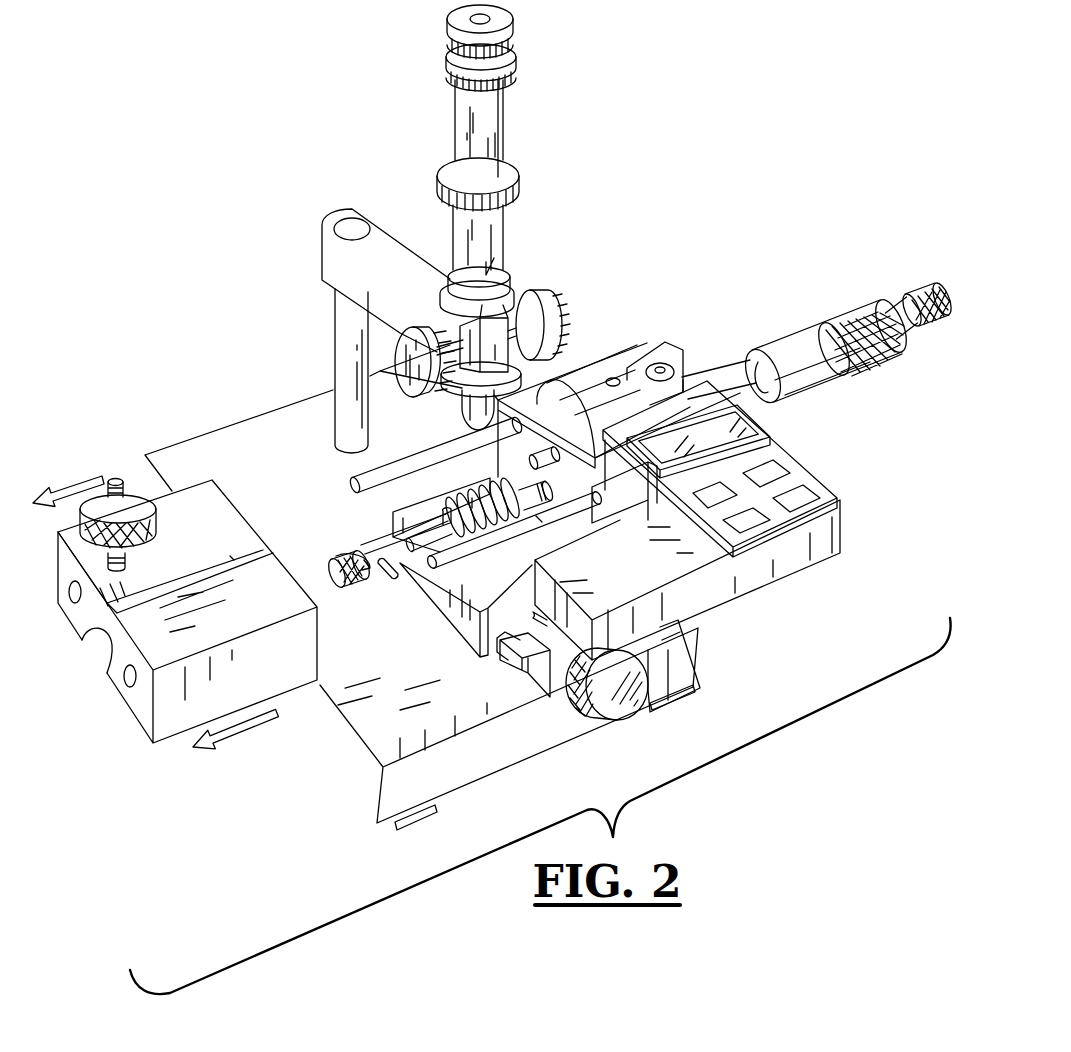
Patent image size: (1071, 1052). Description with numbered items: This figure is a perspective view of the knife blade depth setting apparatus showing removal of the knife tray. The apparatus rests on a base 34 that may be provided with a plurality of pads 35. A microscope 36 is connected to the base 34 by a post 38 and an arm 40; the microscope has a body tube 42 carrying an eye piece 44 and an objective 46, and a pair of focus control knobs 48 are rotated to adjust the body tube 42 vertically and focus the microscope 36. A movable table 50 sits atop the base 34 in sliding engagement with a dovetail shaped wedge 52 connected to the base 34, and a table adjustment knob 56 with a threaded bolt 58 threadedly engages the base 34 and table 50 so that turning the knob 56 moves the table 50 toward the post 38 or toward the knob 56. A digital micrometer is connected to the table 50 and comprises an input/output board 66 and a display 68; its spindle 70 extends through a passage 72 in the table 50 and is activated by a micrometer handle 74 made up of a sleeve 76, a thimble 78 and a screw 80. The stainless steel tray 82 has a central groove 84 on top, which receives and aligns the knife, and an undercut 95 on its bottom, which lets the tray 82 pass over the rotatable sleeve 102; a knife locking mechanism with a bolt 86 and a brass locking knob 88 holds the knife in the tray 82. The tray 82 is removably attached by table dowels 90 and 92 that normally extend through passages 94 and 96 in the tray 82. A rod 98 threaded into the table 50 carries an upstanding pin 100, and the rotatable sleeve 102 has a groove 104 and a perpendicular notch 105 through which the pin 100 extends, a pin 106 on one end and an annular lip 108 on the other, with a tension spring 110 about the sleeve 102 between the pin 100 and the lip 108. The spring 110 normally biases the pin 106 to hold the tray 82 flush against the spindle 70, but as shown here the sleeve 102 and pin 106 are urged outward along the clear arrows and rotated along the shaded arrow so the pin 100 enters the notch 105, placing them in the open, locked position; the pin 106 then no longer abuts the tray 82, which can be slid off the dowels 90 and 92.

The base 34 is at (401, 722).
The pads 35 is at (415, 823).
The microscope 36 is at (568, 317).
The post 38 is at (335, 432).
The arm 40 is at (374, 280).
The body tube 42 is at (522, 201).
The eye piece 44 is at (506, 100).
The objective 46 is at (458, 415).
The focus control knobs 48 is at (552, 302).
The movable table 50 is at (483, 601).
The dovetail shaped wedge 52 is at (508, 656).
The table adjustment knob 56 is at (585, 715).
The threaded bolt 58 is at (532, 618).
The input/output board 66 is at (797, 476).
The display 68 is at (748, 428).
The spindle 70 is at (549, 470).
The passage 72 is at (534, 453).
The micrometer handle 74 is at (818, 314).
The sleeve 76 is at (715, 380).
The thimble 78 is at (777, 343).
The screw 80 is at (926, 330).
The tray 82 is at (221, 684).
The central groove 84 is at (228, 557).
The bolt 86 is at (116, 478).
The locking knob 88 is at (158, 524).
The table dowel 90 is at (360, 470).
The table dowel 92 is at (476, 546).
The passage 94 is at (72, 604).
The undercut 95 is at (102, 660).
The passage 96 is at (125, 690).
The rod 98 is at (527, 495).
The upstanding pin 100 is at (446, 508).
The rotatable sleeve 102 is at (346, 592).
The groove 104 is at (420, 545).
The notch 105 is at (418, 522).
The pin 106 is at (390, 580).
The annular lip 108 is at (542, 522).
The tension spring 110 is at (473, 497).